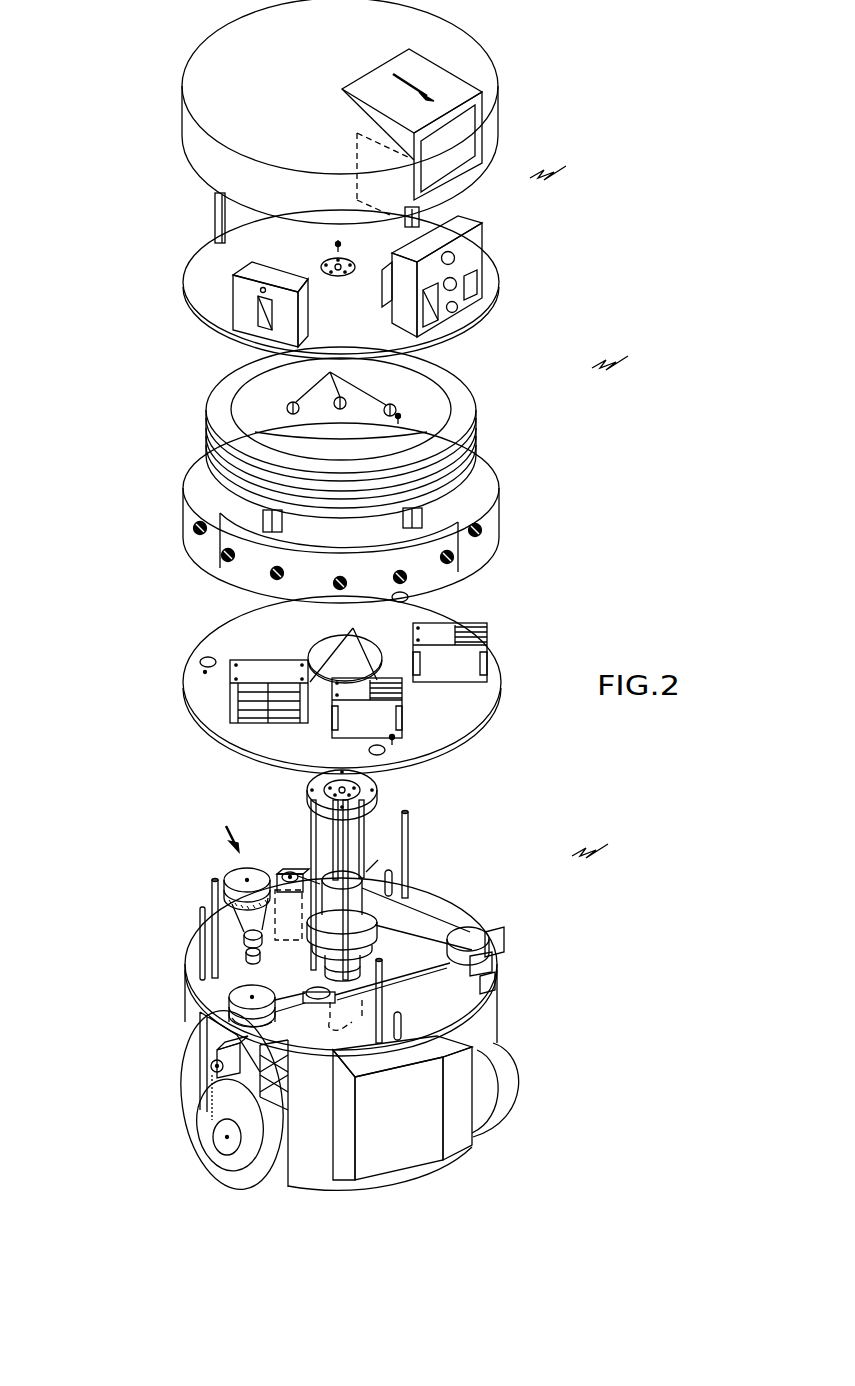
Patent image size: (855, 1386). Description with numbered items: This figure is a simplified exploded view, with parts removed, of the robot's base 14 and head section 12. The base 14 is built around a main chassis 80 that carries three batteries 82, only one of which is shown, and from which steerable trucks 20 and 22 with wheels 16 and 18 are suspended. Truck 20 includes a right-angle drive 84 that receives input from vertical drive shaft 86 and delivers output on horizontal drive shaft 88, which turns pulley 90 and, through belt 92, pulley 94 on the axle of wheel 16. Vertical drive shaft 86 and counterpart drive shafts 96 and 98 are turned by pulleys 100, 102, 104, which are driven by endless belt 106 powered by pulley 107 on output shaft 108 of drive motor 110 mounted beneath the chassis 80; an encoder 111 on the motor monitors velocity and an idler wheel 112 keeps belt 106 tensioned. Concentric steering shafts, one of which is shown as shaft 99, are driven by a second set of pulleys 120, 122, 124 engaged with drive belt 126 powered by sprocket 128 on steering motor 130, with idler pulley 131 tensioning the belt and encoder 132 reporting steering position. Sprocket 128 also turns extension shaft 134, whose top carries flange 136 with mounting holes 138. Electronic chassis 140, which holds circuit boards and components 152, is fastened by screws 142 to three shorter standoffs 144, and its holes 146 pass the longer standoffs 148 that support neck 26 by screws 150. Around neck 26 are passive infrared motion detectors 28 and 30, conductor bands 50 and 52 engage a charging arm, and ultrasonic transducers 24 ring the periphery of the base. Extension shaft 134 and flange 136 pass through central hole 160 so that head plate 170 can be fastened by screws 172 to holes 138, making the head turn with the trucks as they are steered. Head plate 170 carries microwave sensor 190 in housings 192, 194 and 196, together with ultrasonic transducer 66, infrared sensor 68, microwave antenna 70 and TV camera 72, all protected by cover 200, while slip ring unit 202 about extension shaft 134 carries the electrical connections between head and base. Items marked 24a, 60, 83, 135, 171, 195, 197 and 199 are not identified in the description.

The head section 12 is at (557, 161).
The base 14 is at (603, 840).
The wheel 16 is at (220, 1170).
The wheel 18 is at (520, 1096).
The steerable truck 20 is at (200, 1100).
The steerable truck 22 is at (498, 1032).
The ultrasonic transducers 24 is at (240, 364).
The flange ring step 24a is at (232, 565).
The reduced neck 26 is at (618, 357).
The passive infrared motion detector 28 is at (264, 518).
The passive infrared motion detector 30 is at (424, 516).
The conductor band 50 is at (478, 446).
The conductor band 52 is at (478, 408).
The control box 60 is at (452, 258).
The ultrasonic transducer 66 is at (454, 282).
The infrared sensor 68 is at (480, 284).
The microwave transmission and reception antenna 70 is at (424, 312).
The TV camera 72 is at (458, 306).
The main chassis 80 is at (245, 1048).
The batteries 82 is at (420, 1136).
The drive direction arrow 83 is at (223, 825).
The right-angle drive 84 is at (290, 1076).
The vertical drive shaft 86 is at (228, 990).
The horizontal drive shaft 88 is at (290, 1107).
The pulley 90 is at (212, 1068).
The belt 92 is at (212, 1105).
The pulley 94 is at (240, 1140).
The drive shaft 96 is at (236, 870).
The drive shaft 98 is at (480, 932).
The shaft 99 is at (494, 976).
The pulley 100 is at (250, 997).
The pulley 102 is at (245, 879).
The pulley 104 is at (502, 936).
The endless belt 106 is at (410, 908).
The pulley 107 is at (316, 852).
The output shaft 108 is at (292, 872).
The drive motor 110 is at (247, 912).
The encoder 111 is at (306, 956).
The idler wheel 112 is at (244, 936).
The pulley 120 is at (240, 1012).
The pulley 122 is at (242, 925).
The pulley 124 is at (496, 964).
The drive belt 126 is at (468, 926).
The sprocket 128 is at (450, 950).
The steering motor 130 is at (345, 1012).
The idler pulley 131 is at (310, 994).
The encoder 132 is at (345, 1040).
The extension shaft 134 is at (330, 818).
The pulley 135 is at (254, 958).
The flange 136 is at (310, 782).
The mounting holes 138 is at (362, 790).
The electronic chassis 140 is at (448, 625).
The screws 142 is at (400, 735).
The shorter standoffs 144 is at (392, 878).
The holes 146 is at (404, 596).
The longer standoffs 148 is at (410, 832).
The screws 150 is at (404, 414).
The electronic circuit boards and components 152 is at (345, 628).
The central hole 160 is at (318, 660).
The head plate 170 is at (198, 276).
The slot housing 171 is at (405, 80).
The screws 172 is at (330, 250).
The microwave sensor 190 is at (260, 312).
The housing 192 is at (308, 302).
The housing 194 is at (212, 212).
The hole 195 is at (258, 291).
The housing 196 is at (355, 150).
The pin 197 is at (360, 241).
The tab 199 is at (458, 228).
The cover 200 is at (210, 76).
The slip ring unit 202 is at (379, 853).